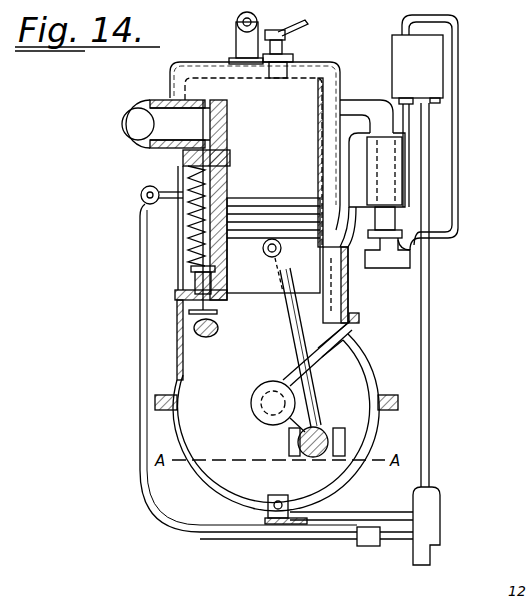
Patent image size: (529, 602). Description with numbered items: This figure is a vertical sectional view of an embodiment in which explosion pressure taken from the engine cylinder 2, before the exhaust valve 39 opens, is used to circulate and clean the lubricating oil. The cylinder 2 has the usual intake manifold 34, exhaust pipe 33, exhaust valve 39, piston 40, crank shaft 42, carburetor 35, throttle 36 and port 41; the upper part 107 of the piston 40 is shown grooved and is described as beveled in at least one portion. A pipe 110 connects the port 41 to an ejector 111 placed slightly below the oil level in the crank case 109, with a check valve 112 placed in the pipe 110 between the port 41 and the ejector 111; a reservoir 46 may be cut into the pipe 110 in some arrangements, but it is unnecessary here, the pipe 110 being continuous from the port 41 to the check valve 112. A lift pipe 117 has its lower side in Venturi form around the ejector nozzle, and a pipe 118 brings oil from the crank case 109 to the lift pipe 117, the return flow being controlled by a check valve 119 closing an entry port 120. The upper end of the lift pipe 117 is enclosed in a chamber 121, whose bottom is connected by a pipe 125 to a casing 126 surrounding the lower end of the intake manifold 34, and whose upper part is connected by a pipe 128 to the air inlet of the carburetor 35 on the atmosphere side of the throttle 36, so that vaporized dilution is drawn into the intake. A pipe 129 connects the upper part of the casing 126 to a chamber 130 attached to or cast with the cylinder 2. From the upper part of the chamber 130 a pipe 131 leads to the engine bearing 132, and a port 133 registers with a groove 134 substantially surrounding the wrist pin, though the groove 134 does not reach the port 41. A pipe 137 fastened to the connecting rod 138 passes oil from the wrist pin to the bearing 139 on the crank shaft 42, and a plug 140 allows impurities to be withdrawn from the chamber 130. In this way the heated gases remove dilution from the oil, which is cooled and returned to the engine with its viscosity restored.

The engine cylinder 2 is at (297, 88).
The exhaust pipe 33 is at (120, 122).
The intake manifold 34 is at (345, 108).
The carburetor 35 is at (400, 265).
The throttle 36 is at (385, 250).
The exhaust valve 39 is at (180, 155).
The piston 40 is at (247, 284).
The port 41 is at (226, 196).
The crank shaft 42 is at (270, 404).
The reservoir 46 is at (141, 196).
The piston 107 is at (305, 197).
The crank case 109 is at (176, 369).
The pipe 110 is at (140, 340).
The ejector 111 is at (440, 535).
The check valve 112 is at (372, 546).
The lift pipe 117 is at (429, 361).
The pipe 118 is at (352, 516).
The check valve 119 is at (266, 510).
The entry port 120 is at (283, 498).
The chamber 121 is at (432, 62).
The pipe 125 is at (410, 125).
The casing 126 is at (397, 178).
The pipe 128 is at (458, 78).
The pipe 129 is at (352, 226).
The chamber 130 is at (350, 296).
The pipe 131 is at (312, 352).
The engine bearing 132 is at (258, 384).
The port 133 is at (326, 258).
The groove 134 is at (244, 243).
The pipe 137 is at (288, 331).
The connecting rod 138 is at (292, 349).
The bearing 139 is at (321, 428).
The plug 140 is at (362, 322).